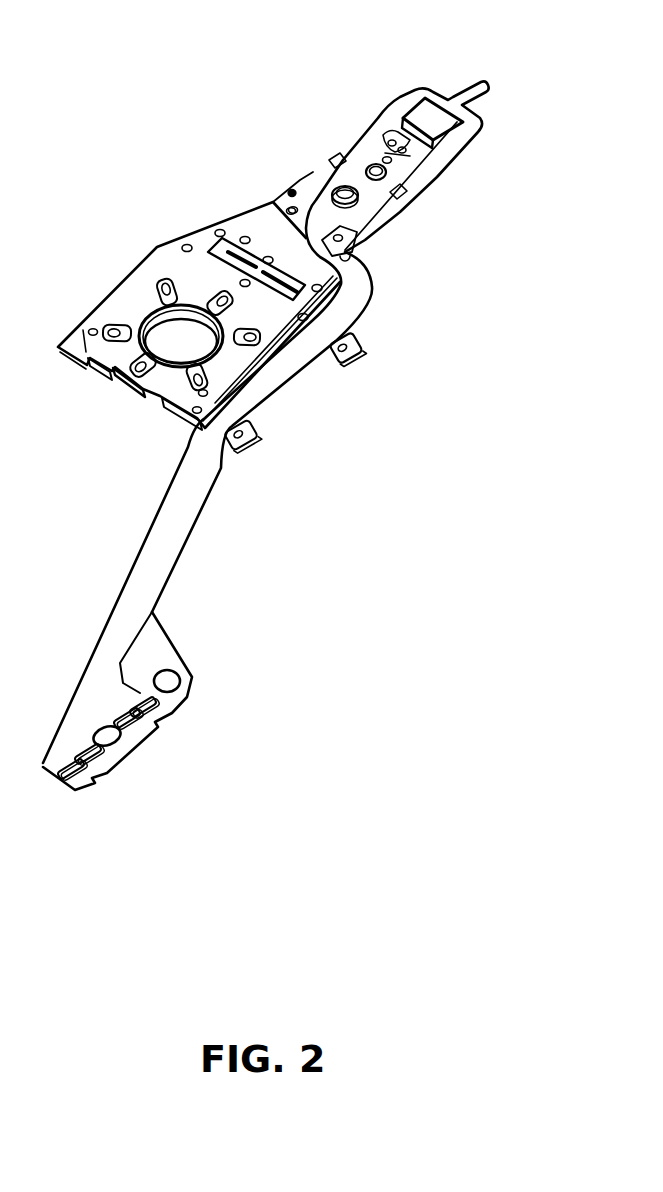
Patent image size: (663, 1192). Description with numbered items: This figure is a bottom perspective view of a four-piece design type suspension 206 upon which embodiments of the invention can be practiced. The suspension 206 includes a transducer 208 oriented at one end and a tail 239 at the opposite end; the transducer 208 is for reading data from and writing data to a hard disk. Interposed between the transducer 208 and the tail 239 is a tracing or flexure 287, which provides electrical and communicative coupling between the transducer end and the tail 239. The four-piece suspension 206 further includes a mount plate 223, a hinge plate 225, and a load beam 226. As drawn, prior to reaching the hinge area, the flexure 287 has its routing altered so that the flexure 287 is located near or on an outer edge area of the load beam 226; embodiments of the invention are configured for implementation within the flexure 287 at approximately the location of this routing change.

The four-piece design type suspension 206 is at (104, 25).
The transducer 208 is at (423, 114).
The mount plate 223 is at (177, 338).
The hinge plate 225 is at (203, 237).
The load beam 226 is at (257, 221).
The tracing or flexure 287 is at (355, 284).
The tail 239 is at (133, 740).